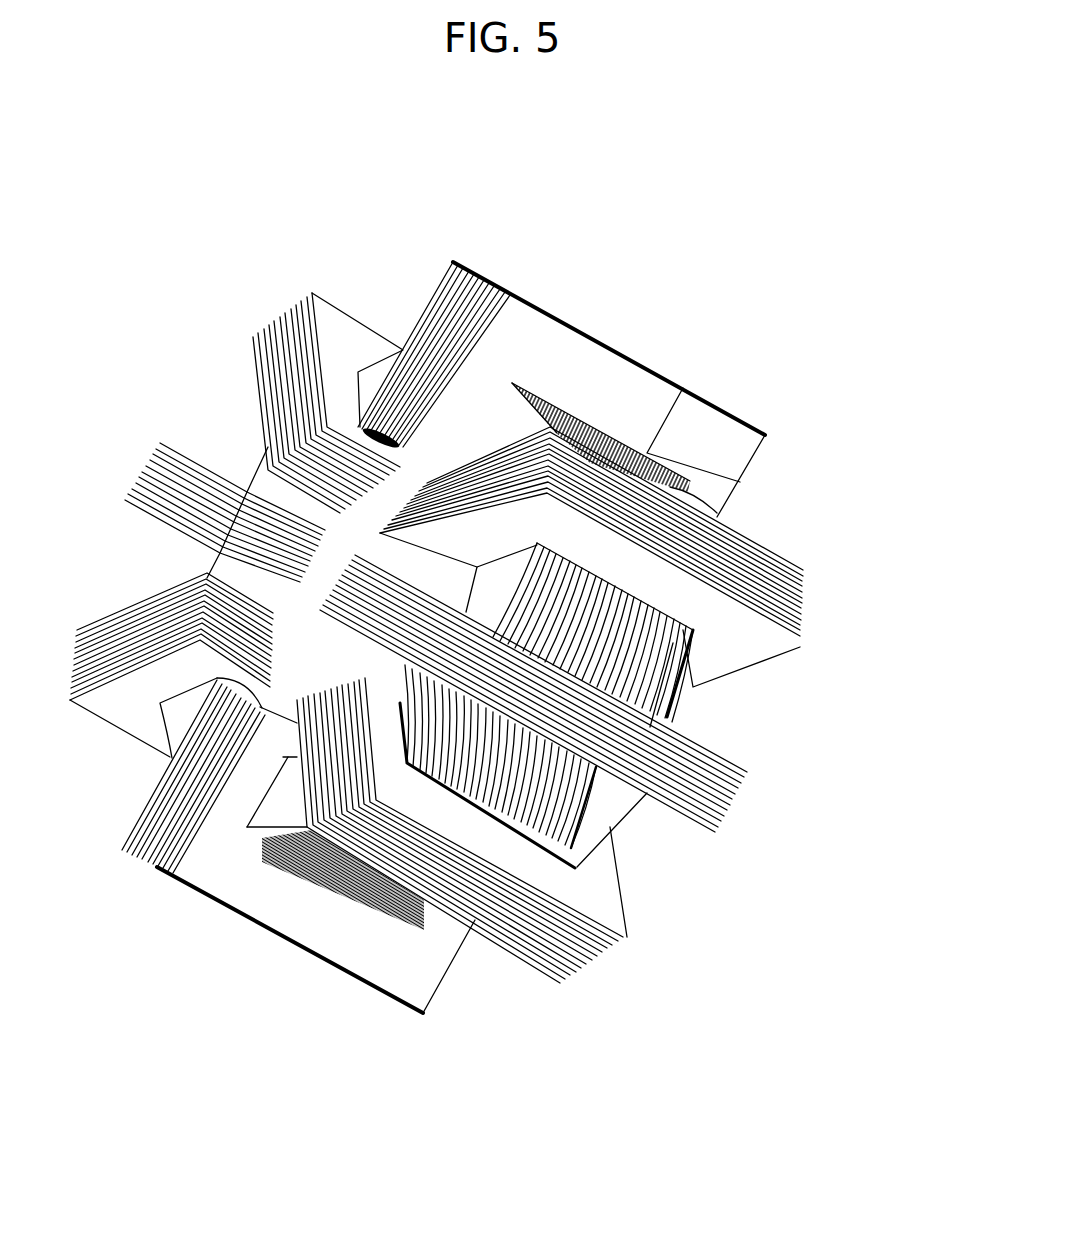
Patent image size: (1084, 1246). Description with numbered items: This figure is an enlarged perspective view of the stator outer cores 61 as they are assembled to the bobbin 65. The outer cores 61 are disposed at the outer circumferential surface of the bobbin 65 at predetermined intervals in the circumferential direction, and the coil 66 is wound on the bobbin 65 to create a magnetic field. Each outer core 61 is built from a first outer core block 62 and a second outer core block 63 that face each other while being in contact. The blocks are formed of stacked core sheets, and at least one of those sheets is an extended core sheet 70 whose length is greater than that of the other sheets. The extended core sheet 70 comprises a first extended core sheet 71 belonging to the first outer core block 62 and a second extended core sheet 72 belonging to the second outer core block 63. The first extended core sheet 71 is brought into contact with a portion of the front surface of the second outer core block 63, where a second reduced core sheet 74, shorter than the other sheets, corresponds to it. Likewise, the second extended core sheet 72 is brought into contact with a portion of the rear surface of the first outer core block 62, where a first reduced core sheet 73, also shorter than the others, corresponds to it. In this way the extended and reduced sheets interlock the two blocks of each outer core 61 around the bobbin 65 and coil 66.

The outer core 61 is at (885, 448).
The first outer core block 62 is at (640, 510).
The second outer core block 63 is at (760, 554).
The bobbin 65 is at (470, 412).
The coil 66 is at (490, 428).
The extended core sheet 70 is at (823, 853).
The first extended core sheet 71 is at (650, 585).
The second extended core sheet 72 is at (592, 888).
The first reduced core sheet 73 is at (418, 805).
The second reduced core sheet 74 is at (760, 640).